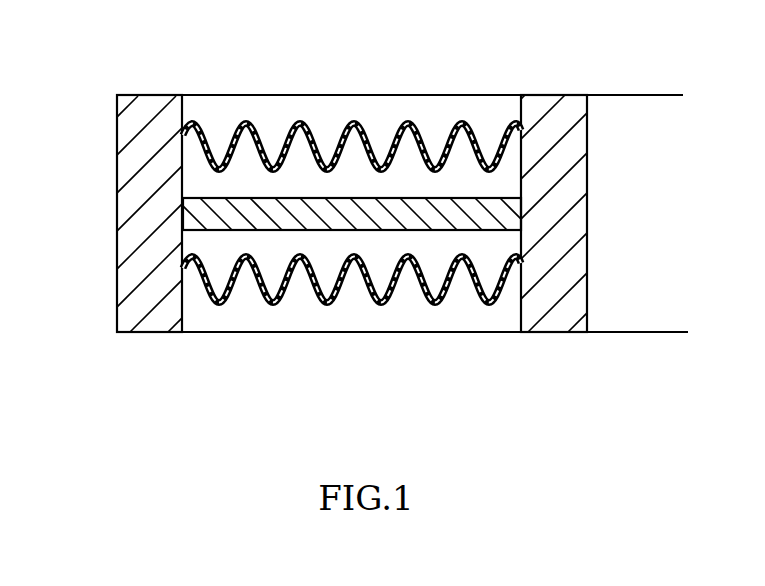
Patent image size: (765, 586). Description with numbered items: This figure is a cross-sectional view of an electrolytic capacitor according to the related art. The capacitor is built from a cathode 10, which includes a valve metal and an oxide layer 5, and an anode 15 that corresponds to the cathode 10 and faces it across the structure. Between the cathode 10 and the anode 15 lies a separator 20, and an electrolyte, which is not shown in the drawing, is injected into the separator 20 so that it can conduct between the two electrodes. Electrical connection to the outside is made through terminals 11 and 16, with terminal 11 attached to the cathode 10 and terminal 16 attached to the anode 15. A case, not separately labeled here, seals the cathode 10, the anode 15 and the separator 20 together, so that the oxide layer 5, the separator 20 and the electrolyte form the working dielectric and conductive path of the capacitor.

The cathode 10 is at (376, 78).
The terminal 11 is at (642, 95).
The terminal 16 is at (645, 332).
The oxide layer 5 is at (188, 127).
The anode 15 is at (321, 345).
The separator 20 is at (187, 208).